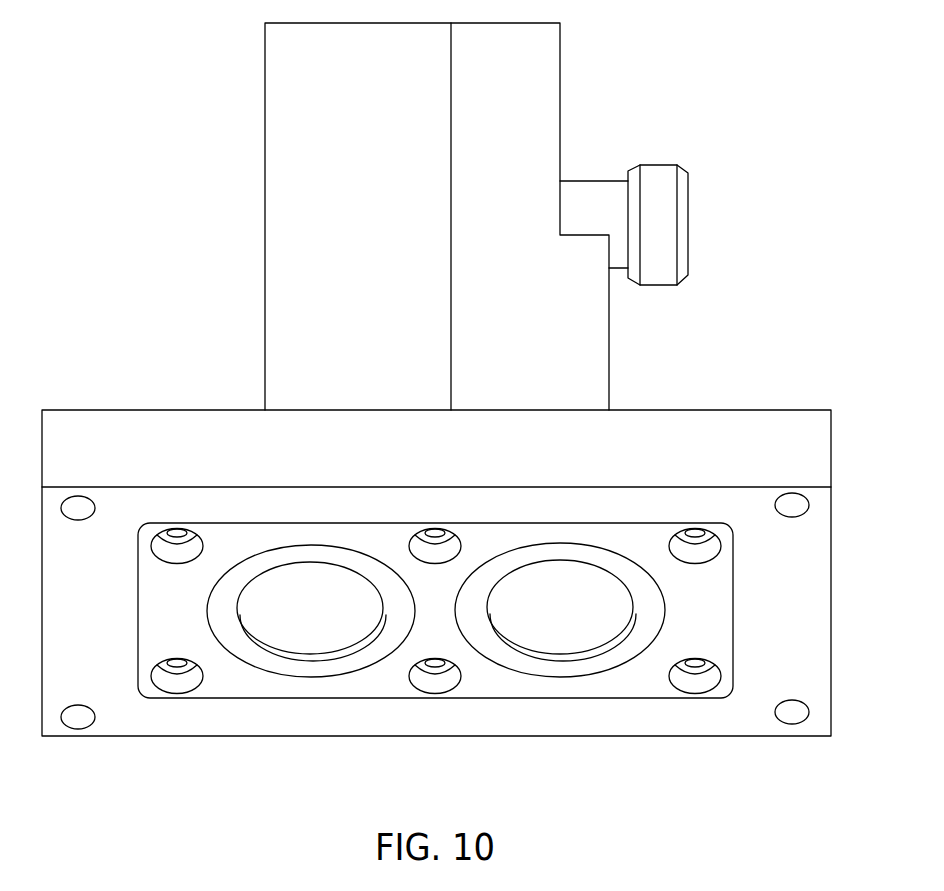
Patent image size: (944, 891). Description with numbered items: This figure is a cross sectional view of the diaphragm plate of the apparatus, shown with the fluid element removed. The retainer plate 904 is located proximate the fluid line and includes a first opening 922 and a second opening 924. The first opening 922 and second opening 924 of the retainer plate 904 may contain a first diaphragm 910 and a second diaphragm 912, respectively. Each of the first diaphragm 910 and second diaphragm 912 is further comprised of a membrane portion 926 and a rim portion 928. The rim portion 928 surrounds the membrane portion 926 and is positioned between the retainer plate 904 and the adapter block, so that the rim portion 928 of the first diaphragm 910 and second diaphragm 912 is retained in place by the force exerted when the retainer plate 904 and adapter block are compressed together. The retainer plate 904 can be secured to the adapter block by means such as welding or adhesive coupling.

The retainer plate 904 is at (733, 698).
The first diaphragm 910 is at (235, 647).
The second diaphragm 912 is at (637, 647).
The first opening 922 is at (293, 678).
The second opening 924 is at (580, 677).
The membrane portion 926 is at (335, 624).
The rim portion 928 is at (357, 657).